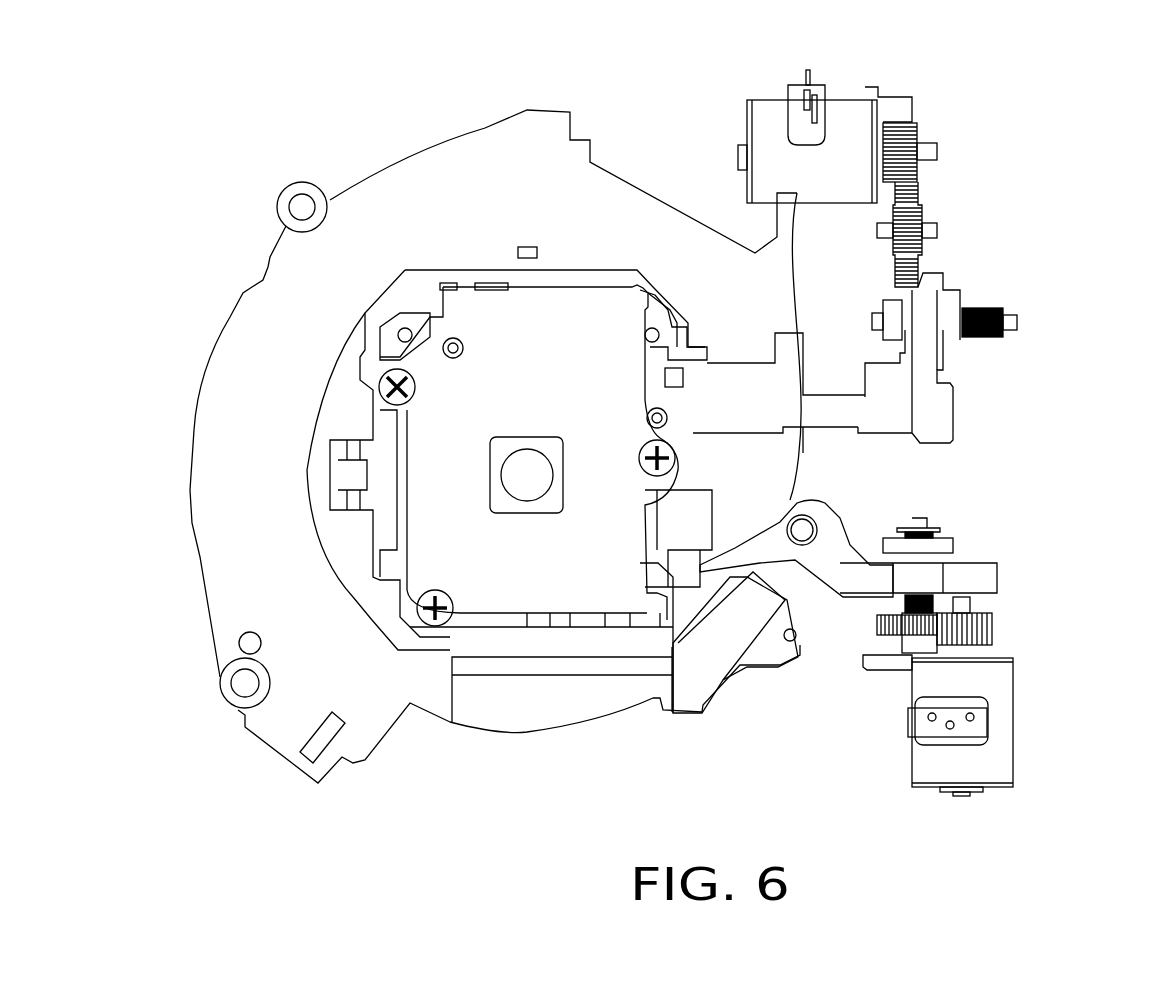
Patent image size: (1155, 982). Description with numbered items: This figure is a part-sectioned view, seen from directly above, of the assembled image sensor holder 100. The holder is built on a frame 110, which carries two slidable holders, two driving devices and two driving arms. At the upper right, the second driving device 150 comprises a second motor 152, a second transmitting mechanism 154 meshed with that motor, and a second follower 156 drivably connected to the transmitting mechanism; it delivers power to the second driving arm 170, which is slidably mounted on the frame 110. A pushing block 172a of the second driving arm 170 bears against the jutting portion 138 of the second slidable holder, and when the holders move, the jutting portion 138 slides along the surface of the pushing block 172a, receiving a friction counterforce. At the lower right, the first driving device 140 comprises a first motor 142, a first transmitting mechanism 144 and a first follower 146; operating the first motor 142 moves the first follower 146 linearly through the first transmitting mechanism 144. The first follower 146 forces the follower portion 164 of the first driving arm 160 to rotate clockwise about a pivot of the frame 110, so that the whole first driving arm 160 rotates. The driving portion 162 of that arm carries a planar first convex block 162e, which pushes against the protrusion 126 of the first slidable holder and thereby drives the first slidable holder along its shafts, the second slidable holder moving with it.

The image sensor holder 100 is at (438, 47).
The frame 110 is at (383, 190).
The protrusion 126 is at (683, 513).
The jutting portion 138 is at (657, 377).
The first driving device 140 is at (905, 768).
The first motor 142 is at (925, 678).
The first transmitting mechanism 144 is at (893, 543).
The first follower 146 is at (912, 638).
The second driving device 150 is at (1070, 108).
The second motor 152 is at (857, 115).
The second transmitting mechanism 154 is at (910, 215).
The second follower 156 is at (953, 303).
The first driving arm 160 is at (840, 570).
The driving portion 162 is at (770, 540).
The first convex block 162e is at (683, 545).
The follower portion 164 is at (983, 580).
The second driving arm 170 is at (890, 408).
The pushing block 172a is at (672, 383).